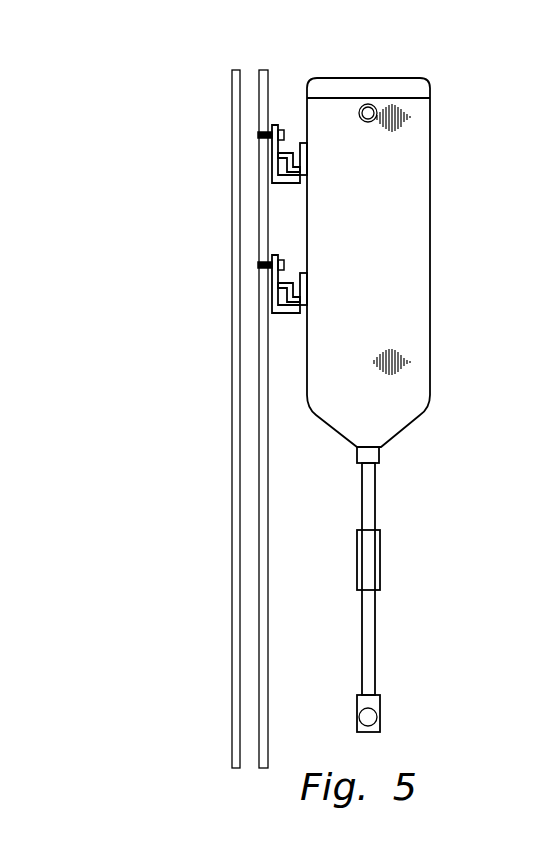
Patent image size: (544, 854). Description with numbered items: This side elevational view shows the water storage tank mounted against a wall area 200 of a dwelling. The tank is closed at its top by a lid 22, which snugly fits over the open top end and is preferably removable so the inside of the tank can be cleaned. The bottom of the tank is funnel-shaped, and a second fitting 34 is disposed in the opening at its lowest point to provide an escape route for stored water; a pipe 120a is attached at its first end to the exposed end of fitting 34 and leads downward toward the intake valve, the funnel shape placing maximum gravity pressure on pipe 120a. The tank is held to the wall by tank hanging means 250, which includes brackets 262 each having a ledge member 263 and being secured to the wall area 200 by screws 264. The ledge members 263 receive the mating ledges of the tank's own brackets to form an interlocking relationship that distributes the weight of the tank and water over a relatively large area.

The lid 22 is at (407, 88).
The second fitting 34 is at (372, 455).
The pipe 120a is at (370, 507).
The wall area 200 is at (250, 553).
The tank hanging means 250 is at (256, 254).
The bracket 262 is at (283, 164).
The ledge member 263 is at (289, 183).
The screws 264 is at (283, 131).